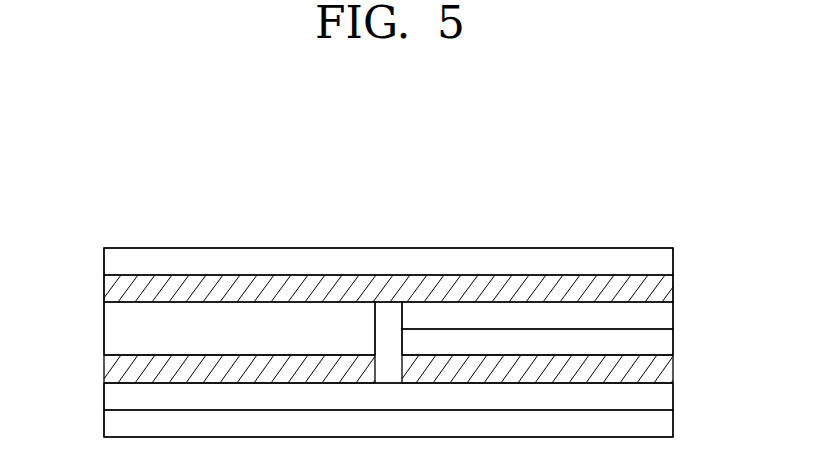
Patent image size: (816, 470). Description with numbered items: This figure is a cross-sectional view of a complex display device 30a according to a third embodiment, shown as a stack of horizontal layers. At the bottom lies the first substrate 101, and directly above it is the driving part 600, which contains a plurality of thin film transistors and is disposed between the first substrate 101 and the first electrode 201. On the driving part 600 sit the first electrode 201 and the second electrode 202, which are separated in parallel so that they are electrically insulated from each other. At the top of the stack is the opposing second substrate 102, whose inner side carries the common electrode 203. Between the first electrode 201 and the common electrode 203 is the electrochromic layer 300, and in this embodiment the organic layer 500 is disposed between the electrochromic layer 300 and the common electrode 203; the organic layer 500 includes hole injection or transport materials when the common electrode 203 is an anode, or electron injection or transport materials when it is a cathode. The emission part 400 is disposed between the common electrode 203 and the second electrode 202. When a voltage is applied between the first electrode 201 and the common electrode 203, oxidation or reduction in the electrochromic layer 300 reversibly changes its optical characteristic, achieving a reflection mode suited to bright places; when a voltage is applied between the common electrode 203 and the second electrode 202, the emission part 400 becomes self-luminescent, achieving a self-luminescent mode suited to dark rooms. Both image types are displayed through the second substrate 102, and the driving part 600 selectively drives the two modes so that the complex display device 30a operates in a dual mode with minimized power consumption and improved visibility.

The complex display device 30a is at (603, 168).
The second substrate 102 is at (662, 263).
The common electrode 203 is at (662, 290).
The organic layer 500 is at (662, 317).
The electrochromic layer 300 is at (662, 343).
The emission part 400 is at (118, 331).
The second electrode 202 is at (118, 366).
The first electrode 201 is at (662, 370).
The driving part 600 is at (662, 398).
The first substrate 101 is at (662, 425).